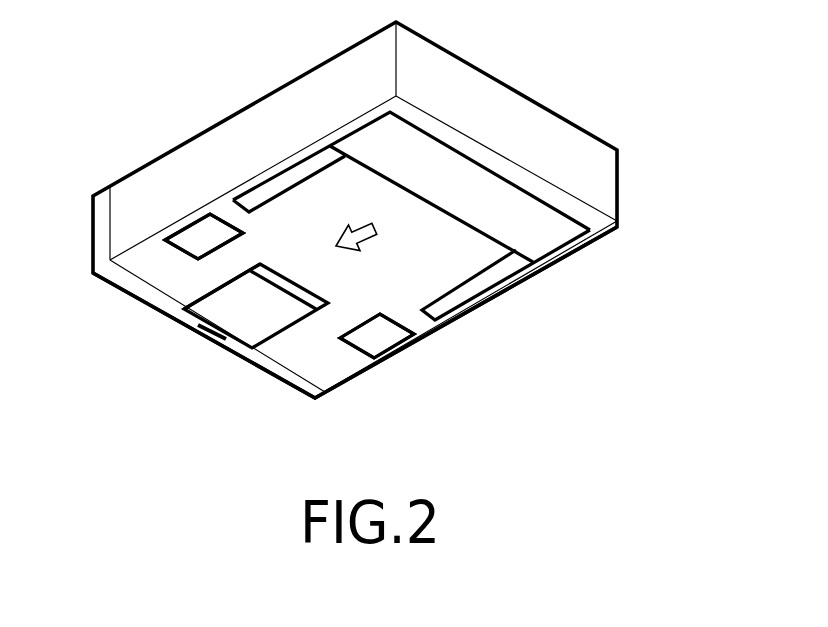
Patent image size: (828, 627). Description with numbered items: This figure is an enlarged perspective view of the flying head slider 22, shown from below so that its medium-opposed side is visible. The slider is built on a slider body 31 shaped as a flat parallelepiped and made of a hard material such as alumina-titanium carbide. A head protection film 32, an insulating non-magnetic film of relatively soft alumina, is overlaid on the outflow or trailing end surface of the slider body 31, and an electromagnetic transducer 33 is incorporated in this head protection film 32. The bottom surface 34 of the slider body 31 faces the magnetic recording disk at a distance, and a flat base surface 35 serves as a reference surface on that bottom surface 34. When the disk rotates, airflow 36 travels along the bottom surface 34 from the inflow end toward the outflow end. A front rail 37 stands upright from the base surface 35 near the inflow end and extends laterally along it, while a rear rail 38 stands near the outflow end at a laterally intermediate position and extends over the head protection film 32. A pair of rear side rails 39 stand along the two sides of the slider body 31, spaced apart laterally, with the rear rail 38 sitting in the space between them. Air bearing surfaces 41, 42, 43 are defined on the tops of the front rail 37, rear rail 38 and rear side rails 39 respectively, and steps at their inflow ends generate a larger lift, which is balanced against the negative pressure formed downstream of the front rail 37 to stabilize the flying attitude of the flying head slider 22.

The flying head slider 22 is at (234, 108).
The slider body 31 is at (364, 371).
The head protection film 32 is at (316, 399).
The electromagnetic transducer 33 is at (206, 330).
The bottom surface 34 is at (505, 292).
The base surface 35 is at (319, 248).
The airflow 36 is at (357, 238).
The front rail 37 is at (583, 204).
The rear rail 38 is at (297, 323).
The rear side rail 39 is at (172, 238).
The air bearing surface 41 is at (467, 218).
The air bearing surface 42 is at (207, 303).
The air bearing surface 43 is at (193, 233).